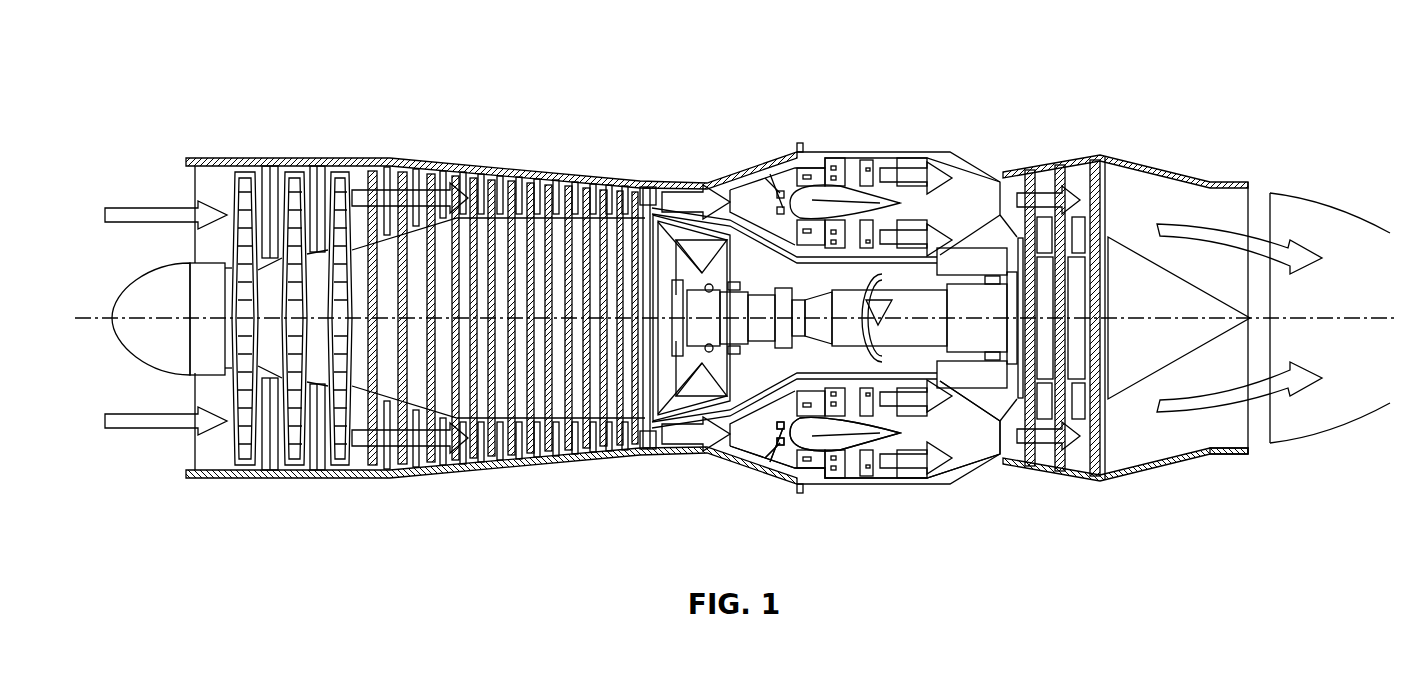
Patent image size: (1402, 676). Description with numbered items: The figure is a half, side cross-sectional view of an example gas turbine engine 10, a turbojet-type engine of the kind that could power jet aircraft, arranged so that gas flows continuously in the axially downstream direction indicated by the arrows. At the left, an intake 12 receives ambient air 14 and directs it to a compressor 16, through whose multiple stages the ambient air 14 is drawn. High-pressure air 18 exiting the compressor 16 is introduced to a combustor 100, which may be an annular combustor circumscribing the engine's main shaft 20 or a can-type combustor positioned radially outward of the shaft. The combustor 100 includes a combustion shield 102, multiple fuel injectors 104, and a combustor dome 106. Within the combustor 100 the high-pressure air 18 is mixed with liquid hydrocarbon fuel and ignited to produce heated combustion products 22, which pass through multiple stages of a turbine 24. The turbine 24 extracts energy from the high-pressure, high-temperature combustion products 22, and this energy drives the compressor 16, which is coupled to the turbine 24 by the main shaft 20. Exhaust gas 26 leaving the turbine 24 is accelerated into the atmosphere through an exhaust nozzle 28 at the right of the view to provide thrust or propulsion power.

The gas turbine engine 10 is at (203, 60).
The intake 12 is at (207, 158).
The ambient air 14 is at (163, 206).
The compressor 16 is at (333, 152).
The high-pressure air 18 is at (688, 196).
The main shaft 20 is at (900, 313).
The combustion products 22 is at (1030, 195).
The turbine 24 is at (1052, 154).
The exhaust gas 26 is at (1280, 250).
The exhaust nozzle 28 is at (1250, 456).
The combustor 100 is at (873, 144).
The combustion shield 102 is at (963, 453).
The fuel injectors 104 is at (783, 455).
The combustor dome 106 is at (795, 456).